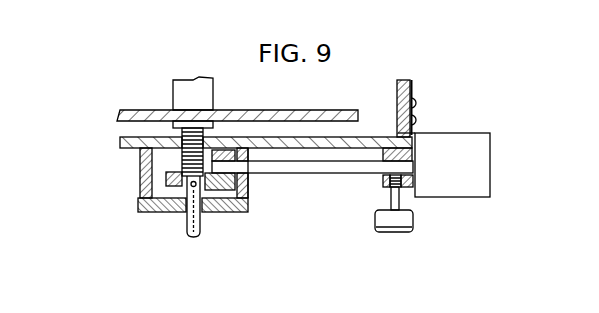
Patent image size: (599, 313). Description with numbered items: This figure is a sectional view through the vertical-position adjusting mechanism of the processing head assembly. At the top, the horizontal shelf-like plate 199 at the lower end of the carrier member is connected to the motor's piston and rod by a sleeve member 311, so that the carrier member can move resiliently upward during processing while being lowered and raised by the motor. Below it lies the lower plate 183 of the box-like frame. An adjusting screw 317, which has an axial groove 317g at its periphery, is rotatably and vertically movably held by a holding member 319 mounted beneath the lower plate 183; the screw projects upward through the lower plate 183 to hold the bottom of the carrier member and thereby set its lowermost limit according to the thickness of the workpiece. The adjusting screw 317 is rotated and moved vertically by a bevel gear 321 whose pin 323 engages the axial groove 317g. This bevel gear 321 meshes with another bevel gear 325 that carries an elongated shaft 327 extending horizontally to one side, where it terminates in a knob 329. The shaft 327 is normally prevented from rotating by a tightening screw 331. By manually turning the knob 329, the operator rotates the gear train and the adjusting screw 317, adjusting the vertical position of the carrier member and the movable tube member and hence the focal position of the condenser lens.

The sleeve member 311 is at (175, 84).
The adjusting screw 317 is at (180, 136).
The axial groove 317g is at (202, 218).
The bevel gear 325 is at (223, 150).
The shelf-like plate 199 is at (280, 110).
The lower plate 183 is at (118, 142).
The bevel gear 321 is at (140, 188).
The holding member 319 is at (138, 202).
The pin 323 is at (229, 187).
The elongated shaft 327 is at (322, 174).
The knob 329 is at (473, 192).
The tightening screw 331 is at (403, 228).